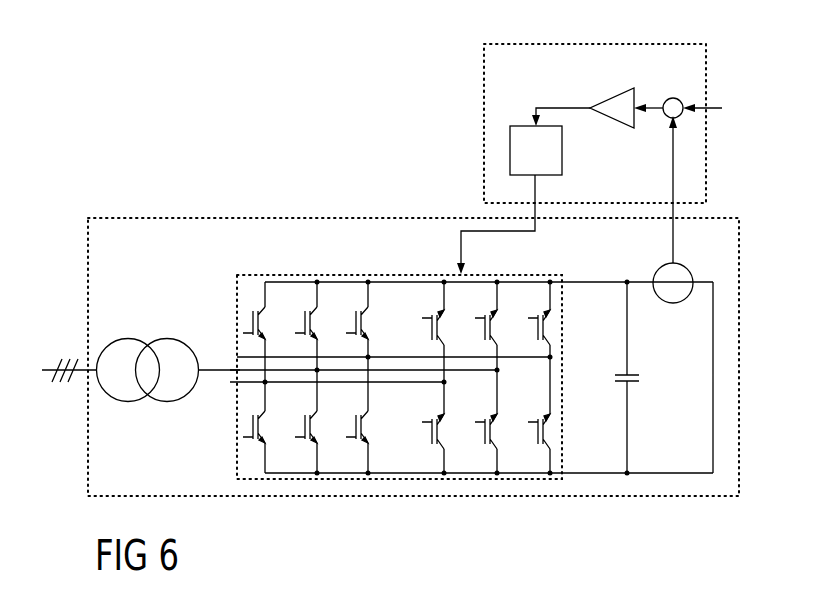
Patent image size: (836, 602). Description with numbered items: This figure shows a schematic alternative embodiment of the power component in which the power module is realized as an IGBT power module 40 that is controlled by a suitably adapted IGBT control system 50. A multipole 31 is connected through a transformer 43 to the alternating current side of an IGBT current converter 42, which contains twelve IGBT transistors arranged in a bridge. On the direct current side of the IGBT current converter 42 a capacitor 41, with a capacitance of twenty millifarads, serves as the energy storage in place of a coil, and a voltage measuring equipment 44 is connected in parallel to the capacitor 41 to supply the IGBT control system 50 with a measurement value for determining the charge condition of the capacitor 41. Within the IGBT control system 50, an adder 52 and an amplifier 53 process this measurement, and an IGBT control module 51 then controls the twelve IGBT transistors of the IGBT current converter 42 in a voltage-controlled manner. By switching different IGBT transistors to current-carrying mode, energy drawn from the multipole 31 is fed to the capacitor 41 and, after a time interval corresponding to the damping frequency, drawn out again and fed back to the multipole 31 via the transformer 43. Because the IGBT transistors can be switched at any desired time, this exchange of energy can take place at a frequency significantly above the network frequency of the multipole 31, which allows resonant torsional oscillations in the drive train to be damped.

The multipole 31 is at (46, 372).
The IGBT power module 40 is at (298, 218).
The capacitor 41 is at (633, 382).
The IGBT current converter 42 is at (390, 275).
The transformer 43 is at (130, 340).
The voltage measuring equipment 44 is at (678, 303).
The IGBT control system 50 is at (484, 164).
The IGBT control module 51 is at (562, 146).
The adder 52 is at (670, 98).
The amplifier 53 is at (606, 100).